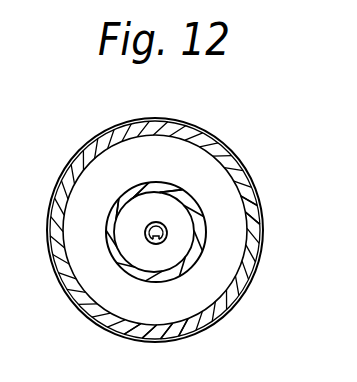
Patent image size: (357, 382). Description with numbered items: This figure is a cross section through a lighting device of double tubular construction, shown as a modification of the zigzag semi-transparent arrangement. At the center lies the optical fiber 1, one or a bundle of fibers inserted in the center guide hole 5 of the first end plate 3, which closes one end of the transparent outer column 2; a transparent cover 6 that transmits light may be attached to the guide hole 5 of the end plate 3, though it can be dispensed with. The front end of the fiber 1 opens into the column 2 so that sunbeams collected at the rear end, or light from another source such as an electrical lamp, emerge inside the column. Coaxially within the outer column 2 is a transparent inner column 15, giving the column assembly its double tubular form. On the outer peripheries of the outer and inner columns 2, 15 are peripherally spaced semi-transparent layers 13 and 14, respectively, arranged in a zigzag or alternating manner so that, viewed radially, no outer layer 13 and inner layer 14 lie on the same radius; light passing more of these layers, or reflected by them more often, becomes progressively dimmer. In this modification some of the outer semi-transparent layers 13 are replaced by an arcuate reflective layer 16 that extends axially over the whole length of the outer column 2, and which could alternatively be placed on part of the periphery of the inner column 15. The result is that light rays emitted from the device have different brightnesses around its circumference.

The optical fiber 1 is at (164, 229).
The column 2 is at (93, 146).
The first end plate 3 is at (204, 240).
The center guide hole 5 is at (157, 242).
The transparent cover 6 is at (153, 224).
The outer semi-transparent layers 13 is at (177, 345).
The inner semi-transparent layers 14 is at (138, 187).
The inner column 15 is at (171, 189).
The arcuate reflective layer 16 is at (253, 172).